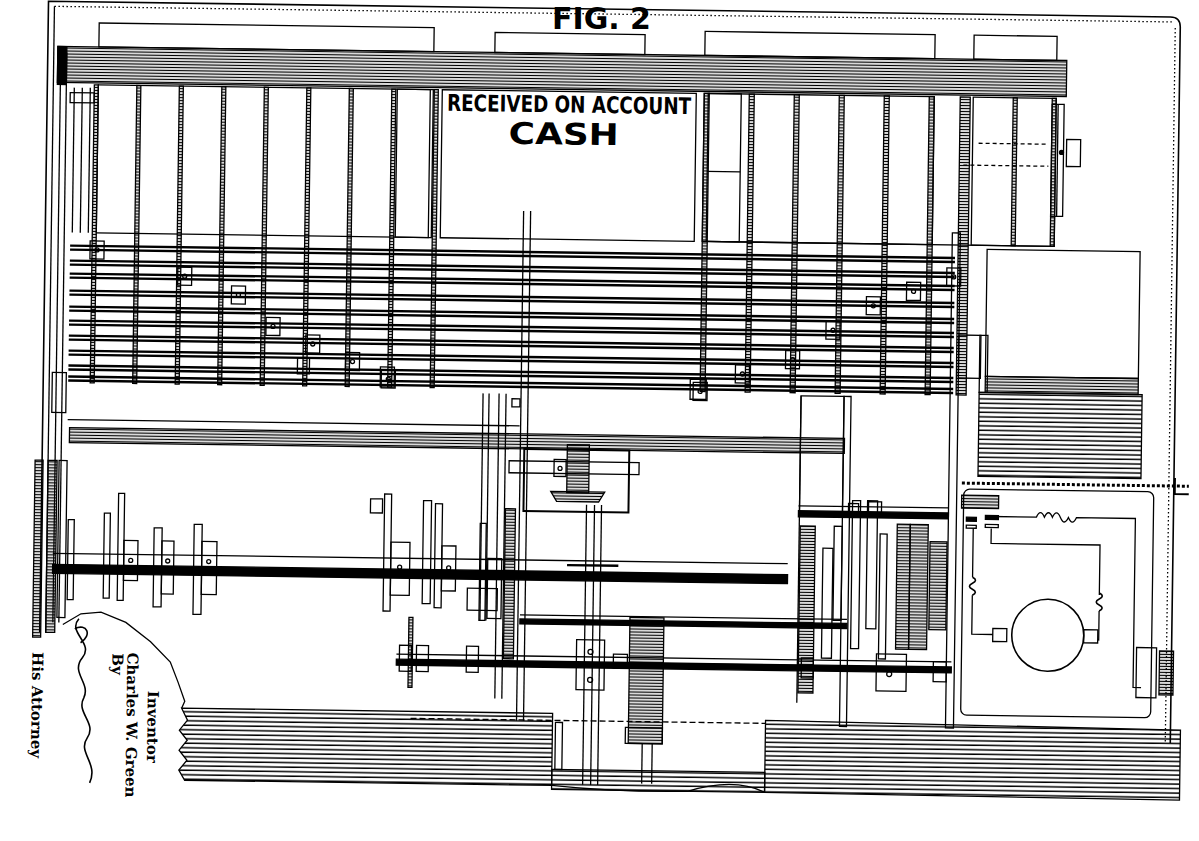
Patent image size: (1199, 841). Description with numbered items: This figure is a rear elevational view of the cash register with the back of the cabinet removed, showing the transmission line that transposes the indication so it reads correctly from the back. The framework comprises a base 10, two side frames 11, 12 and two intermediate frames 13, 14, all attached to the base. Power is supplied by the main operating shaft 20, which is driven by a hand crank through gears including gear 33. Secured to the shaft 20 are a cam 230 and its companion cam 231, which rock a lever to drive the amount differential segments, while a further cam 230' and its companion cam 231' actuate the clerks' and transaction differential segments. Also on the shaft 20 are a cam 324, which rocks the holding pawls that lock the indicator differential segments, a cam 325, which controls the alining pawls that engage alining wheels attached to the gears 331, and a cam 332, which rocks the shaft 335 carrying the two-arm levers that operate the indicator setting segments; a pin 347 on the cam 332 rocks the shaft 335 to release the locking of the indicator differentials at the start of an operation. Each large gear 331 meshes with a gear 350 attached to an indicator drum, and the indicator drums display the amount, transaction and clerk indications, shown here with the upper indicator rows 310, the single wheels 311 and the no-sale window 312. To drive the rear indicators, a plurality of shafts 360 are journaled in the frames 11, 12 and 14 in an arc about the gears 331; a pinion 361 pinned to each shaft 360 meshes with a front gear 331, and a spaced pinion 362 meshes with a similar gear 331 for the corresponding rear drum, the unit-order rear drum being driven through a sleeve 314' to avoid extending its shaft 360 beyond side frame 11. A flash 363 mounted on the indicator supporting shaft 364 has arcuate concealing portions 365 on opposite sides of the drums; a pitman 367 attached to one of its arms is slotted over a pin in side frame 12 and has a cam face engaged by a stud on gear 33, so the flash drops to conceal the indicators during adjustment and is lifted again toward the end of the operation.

The base 10 is at (750, 722).
The side frame 11 is at (952, 411).
The side frame 12 is at (70, 414).
The intermediate frame 13 is at (852, 414).
The intermediate frame 14 is at (522, 404).
The main operating shaft 20 is at (280, 560).
The gear 33 is at (58, 497).
The cam 230 is at (140, 535).
The companion cam 231 is at (96, 537).
The cam 230' is at (456, 544).
The companion cam 231' is at (416, 535).
The indicator wheels 310 is at (236, 31).
The indicator wheel 311 is at (403, 36).
The no sale indicator 312 is at (477, 40).
The sleeve 314' is at (1036, 170).
The cam 324 is at (198, 522).
The cam 325 is at (160, 530).
The gear 331 is at (698, 233).
The cam 332 is at (388, 494).
The shaft 335 is at (233, 432).
The pin 347 is at (370, 508).
The gear 350 is at (700, 170).
The shafts 360 is at (575, 300).
The pinion 361 is at (380, 387).
The pinion 362 is at (696, 386).
The flash 363 is at (66, 93).
The indicator supporting shaft 364 is at (1078, 143).
The concealing portions 365 is at (1062, 78).
The pitman 367 is at (66, 397).